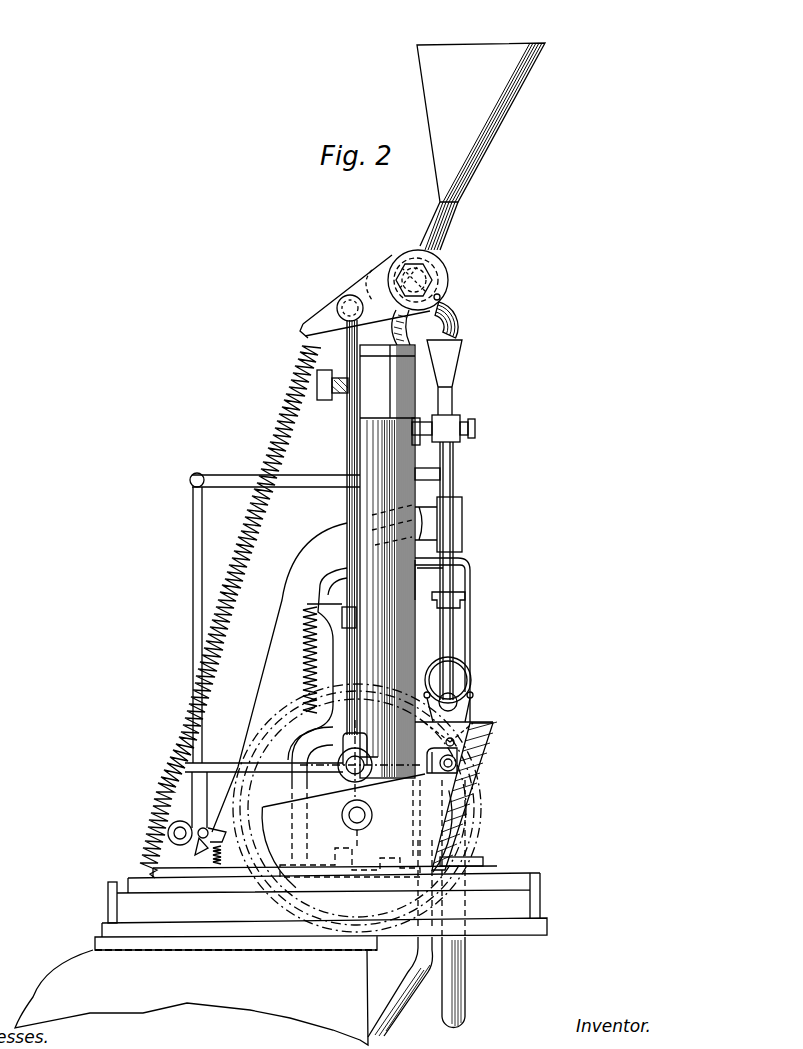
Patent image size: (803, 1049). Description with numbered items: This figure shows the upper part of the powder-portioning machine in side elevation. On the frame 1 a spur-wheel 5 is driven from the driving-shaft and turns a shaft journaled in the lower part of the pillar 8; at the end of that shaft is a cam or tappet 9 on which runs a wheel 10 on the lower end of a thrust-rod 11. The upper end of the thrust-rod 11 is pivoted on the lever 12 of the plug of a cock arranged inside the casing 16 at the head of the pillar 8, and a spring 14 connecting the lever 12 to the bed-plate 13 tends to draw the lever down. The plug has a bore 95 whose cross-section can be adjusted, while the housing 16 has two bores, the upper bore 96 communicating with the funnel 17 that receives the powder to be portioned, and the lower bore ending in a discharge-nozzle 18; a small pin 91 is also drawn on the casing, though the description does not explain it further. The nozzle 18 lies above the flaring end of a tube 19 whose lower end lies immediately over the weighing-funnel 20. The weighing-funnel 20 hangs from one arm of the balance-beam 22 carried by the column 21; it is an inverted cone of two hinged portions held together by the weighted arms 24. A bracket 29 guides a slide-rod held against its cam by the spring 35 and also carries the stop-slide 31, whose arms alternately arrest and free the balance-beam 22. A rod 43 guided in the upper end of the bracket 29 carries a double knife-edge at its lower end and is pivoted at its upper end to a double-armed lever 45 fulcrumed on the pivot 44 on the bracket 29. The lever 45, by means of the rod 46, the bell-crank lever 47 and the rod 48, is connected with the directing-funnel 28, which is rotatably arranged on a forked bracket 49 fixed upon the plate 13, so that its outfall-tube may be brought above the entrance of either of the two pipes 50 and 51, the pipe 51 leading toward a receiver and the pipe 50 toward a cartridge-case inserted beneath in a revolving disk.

The frame 1 is at (32, 997).
The spur-wheel 5 is at (270, 896).
The pillar 8 is at (411, 577).
The cam or tappet 9 is at (281, 805).
The wheel 10 is at (342, 757).
The thrust-rod 11 is at (348, 504).
The lever 12 is at (362, 292).
The bed-plate 13 is at (179, 882).
The spring 14 is at (297, 373).
The casing 16 is at (447, 273).
The funnel 17 is at (494, 164).
The discharge-nozzle 18 is at (458, 325).
The tube 19 is at (459, 379).
The weighing-funnel 20 is at (476, 719).
The column 21 is at (462, 645).
The balance-beam 22 is at (443, 430).
The weighted arms 24 is at (472, 699).
The directing-funnel 28 is at (491, 744).
The bracket 29 is at (283, 608).
The stop-slide 31 is at (423, 568).
The spring 35 is at (304, 648).
The rod 43 is at (392, 327).
The pivot 44 is at (352, 462).
The double-armed lever 45 is at (215, 486).
The rod 46 is at (195, 611).
The bell-crank lever 47 is at (196, 795).
The rod 48 is at (290, 735).
The forked bracket 49 is at (416, 778).
The pipe 50 is at (466, 958).
The pipe 51 is at (416, 951).
The pin 91 is at (447, 297).
The bore 95 is at (398, 261).
The bore 96 is at (416, 251).